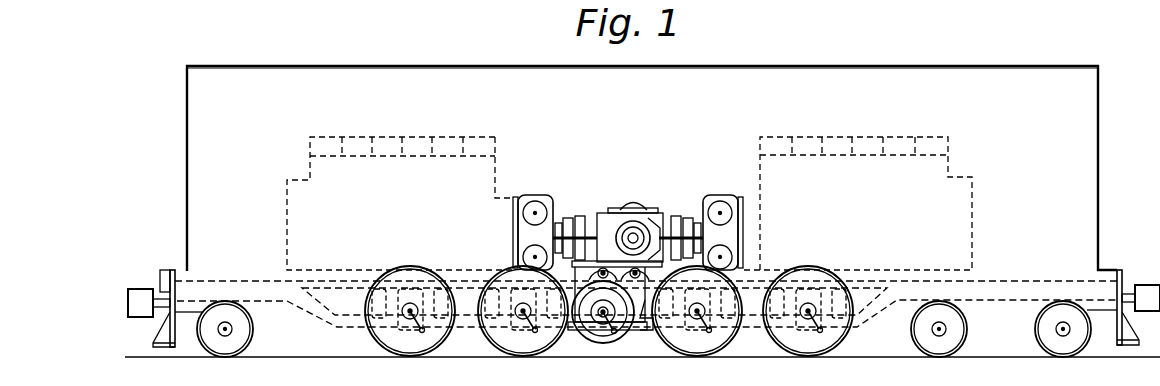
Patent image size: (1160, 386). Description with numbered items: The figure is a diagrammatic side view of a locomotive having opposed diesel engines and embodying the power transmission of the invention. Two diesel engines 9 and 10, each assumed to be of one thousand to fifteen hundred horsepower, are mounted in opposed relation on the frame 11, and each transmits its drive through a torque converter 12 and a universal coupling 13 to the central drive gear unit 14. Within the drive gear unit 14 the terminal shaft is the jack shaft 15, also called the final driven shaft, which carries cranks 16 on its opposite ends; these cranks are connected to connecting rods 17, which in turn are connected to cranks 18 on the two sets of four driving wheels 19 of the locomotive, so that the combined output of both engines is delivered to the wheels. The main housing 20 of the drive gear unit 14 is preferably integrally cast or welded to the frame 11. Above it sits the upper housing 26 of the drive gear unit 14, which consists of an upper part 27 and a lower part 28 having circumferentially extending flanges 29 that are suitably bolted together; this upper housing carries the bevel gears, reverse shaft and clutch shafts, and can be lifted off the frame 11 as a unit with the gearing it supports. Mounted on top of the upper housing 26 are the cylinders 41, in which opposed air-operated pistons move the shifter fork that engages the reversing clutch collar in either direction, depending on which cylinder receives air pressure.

The diesel engine 9 is at (493, 163).
The diesel engine 10 is at (947, 164).
The frame 11 is at (203, 282).
The torque converter 12 is at (543, 193).
The universal coupling 13 is at (573, 228).
The drive gear unit 14 is at (648, 208).
The jack shaft 15 is at (590, 322).
The crank 16 is at (608, 327).
The connecting rod 17 is at (547, 329).
The crank 18 is at (517, 330).
The driving wheel 19 is at (408, 344).
The main housing 20 is at (645, 308).
The upper housing 26 is at (653, 219).
The upper part 27 is at (608, 225).
The lower part 28 is at (585, 269).
The flange 29 is at (650, 269).
The cylinder 41 is at (633, 201).